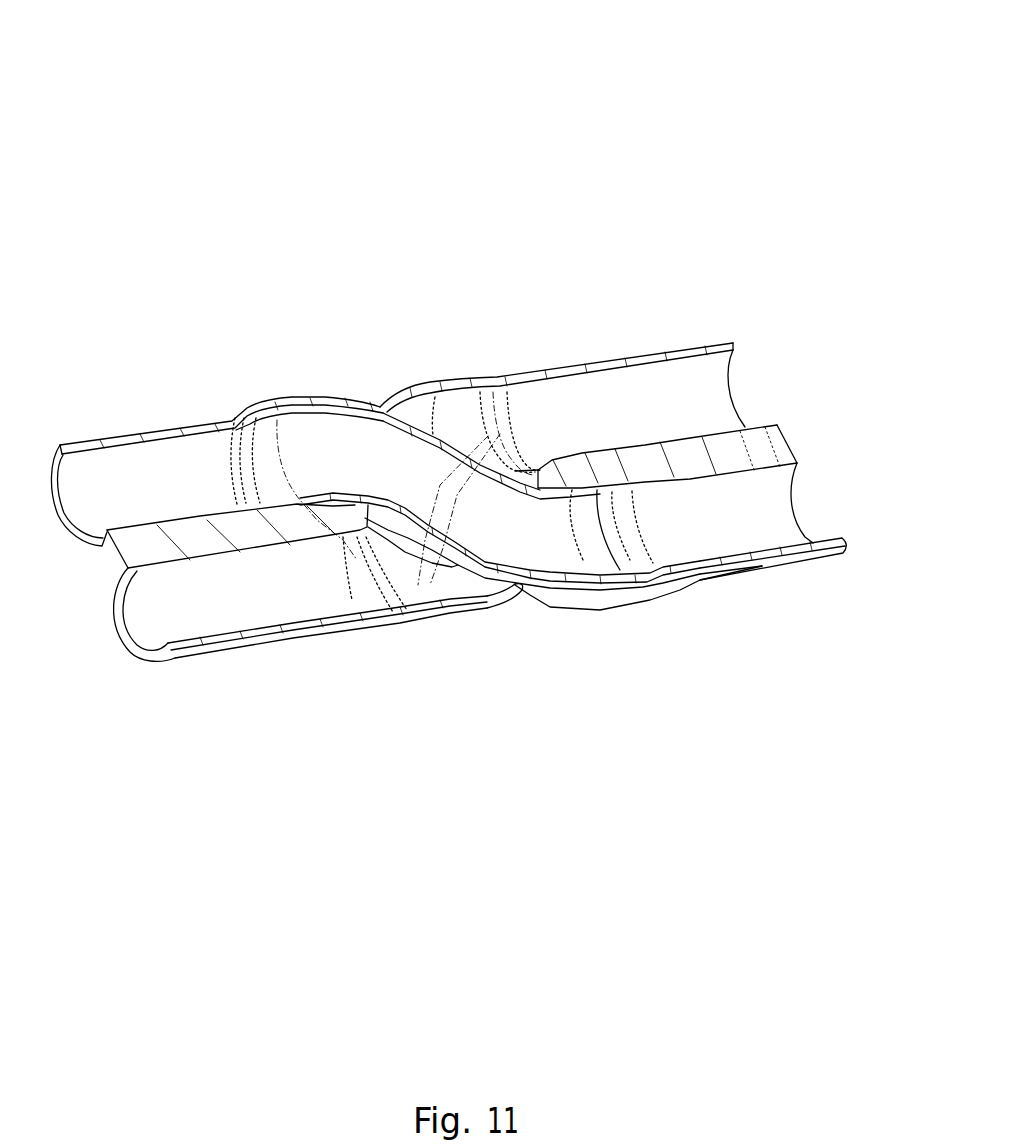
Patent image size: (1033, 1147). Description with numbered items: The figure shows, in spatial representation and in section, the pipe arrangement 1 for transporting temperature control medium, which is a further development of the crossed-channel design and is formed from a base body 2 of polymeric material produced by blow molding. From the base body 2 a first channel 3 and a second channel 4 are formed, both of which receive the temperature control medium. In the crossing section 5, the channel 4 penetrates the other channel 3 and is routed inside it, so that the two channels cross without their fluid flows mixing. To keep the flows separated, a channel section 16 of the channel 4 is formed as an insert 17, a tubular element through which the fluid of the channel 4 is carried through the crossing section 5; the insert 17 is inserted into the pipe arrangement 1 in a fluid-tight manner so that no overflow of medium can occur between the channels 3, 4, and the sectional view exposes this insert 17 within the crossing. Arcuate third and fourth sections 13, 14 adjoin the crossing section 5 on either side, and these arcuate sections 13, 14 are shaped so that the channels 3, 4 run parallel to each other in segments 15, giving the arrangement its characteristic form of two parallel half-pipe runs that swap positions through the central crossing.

The pipe arrangement 1 is at (320, 160).
The base body 2 is at (297, 624).
The first channel 3 is at (112, 487).
The second channel 4 is at (203, 605).
The crossing section 5 is at (430, 308).
The third arcuate section 13 is at (352, 457).
The fourth arcuate section 14 is at (562, 548).
The segments 15 is at (634, 303).
The channel section 16 is at (423, 483).
The insert 17 is at (497, 572).